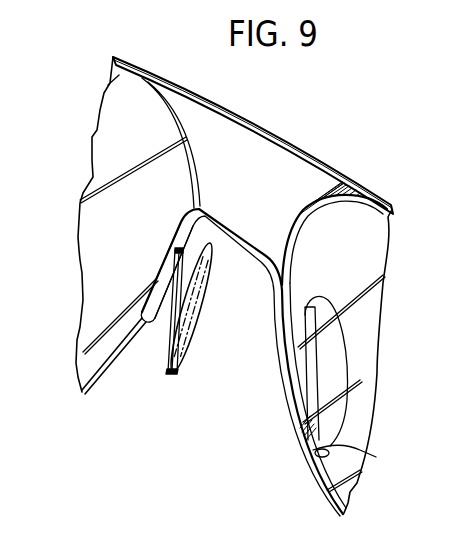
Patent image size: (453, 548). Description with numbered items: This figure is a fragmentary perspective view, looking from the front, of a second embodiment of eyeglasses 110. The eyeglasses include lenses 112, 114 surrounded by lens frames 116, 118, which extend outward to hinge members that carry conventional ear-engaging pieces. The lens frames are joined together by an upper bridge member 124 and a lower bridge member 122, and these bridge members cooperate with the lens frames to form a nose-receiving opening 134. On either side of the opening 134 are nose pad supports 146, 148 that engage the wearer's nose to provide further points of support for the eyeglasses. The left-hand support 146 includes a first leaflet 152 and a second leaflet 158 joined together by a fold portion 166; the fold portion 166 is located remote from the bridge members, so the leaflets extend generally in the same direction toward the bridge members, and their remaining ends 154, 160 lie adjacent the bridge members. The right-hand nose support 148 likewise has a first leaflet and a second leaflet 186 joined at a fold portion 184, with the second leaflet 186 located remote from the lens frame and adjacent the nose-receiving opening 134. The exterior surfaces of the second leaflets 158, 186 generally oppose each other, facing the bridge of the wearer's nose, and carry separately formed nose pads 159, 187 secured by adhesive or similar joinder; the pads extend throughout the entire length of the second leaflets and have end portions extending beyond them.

The eyeglasses 110 is at (240, 106).
The lens 112 is at (86, 252).
The lens 114 is at (370, 293).
The lens frame 116 is at (82, 393).
The lens frame 118 is at (344, 514).
The lower bridge member 122 is at (224, 216).
The upper bridge member 124 is at (268, 130).
The nose-receiving opening 134 is at (254, 287).
The nose pad support 146 is at (180, 382).
The nose pad support 148 is at (360, 356).
The first leg or leaflet 152 is at (165, 335).
The remaining end 154 is at (171, 262).
The second leg or leaflet 158 is at (208, 291).
The nose pad 159 is at (211, 342).
The remaining end 160 is at (176, 247).
The fold portion 166 is at (170, 370).
The fold portion 184 is at (360, 450).
The second leaflet 186 is at (316, 338).
The nose pad 187 is at (337, 418).